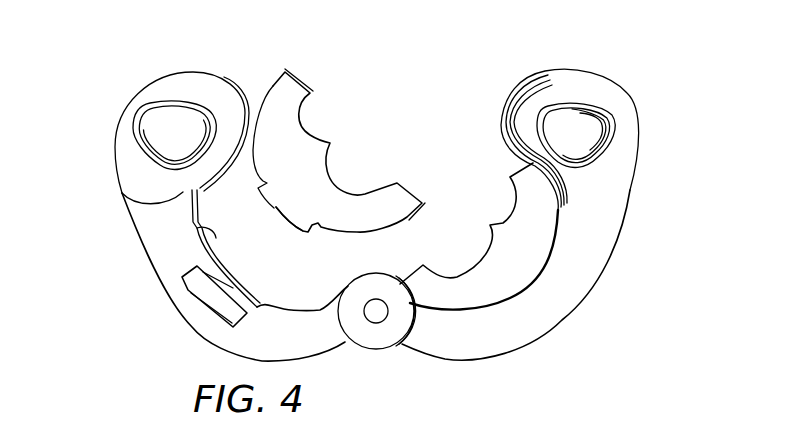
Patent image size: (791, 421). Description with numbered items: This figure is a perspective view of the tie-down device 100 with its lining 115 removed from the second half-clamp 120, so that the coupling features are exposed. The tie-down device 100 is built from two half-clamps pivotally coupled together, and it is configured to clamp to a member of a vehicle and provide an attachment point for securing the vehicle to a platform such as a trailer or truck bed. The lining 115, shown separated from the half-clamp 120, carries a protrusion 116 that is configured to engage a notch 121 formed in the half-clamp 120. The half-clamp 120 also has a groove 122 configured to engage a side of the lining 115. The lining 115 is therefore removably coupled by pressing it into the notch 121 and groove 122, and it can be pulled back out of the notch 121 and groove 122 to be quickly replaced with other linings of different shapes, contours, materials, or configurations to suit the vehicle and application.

The tie-down device 100 is at (664, 84).
The second lining 115 is at (283, 92).
The protrusion 116 is at (276, 210).
The second half-clamp 120 is at (118, 155).
The notch 121 is at (212, 297).
The groove 122 is at (193, 246).